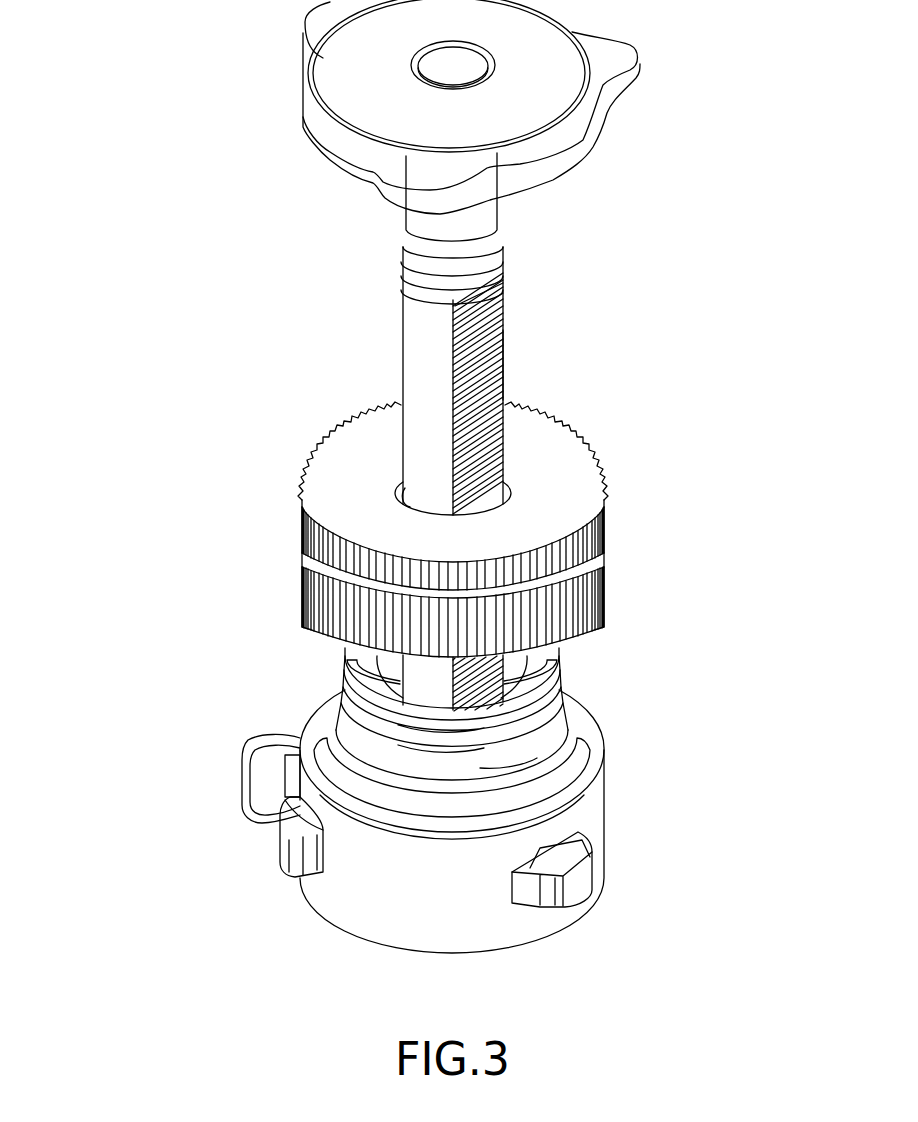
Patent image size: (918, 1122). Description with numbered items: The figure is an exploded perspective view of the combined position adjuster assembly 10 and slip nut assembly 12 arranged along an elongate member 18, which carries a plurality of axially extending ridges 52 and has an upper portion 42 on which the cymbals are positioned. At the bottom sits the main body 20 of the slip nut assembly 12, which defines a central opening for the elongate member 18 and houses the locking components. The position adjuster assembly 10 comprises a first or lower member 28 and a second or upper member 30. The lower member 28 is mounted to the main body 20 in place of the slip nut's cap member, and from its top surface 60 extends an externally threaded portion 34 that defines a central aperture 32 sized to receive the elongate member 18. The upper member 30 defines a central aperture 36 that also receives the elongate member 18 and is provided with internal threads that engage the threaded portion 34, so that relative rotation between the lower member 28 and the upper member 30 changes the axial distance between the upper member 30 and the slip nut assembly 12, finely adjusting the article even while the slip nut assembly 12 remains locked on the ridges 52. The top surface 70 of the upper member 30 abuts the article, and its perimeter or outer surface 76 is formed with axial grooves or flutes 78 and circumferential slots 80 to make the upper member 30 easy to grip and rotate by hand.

The position adjuster assembly 10 is at (110, 541).
The slip nut assembly 12 is at (298, 883).
The elongate member 18 is at (347, 342).
The main body 20 is at (603, 831).
The first or lower member 28 is at (609, 748).
The second or upper member 30 is at (623, 543).
The central aperture 32 is at (530, 670).
The threaded portion 34 is at (343, 674).
The central aperture 36 is at (416, 497).
The upper portion 42 is at (503, 322).
The ridges 52 is at (503, 357).
The top surface 60 is at (577, 700).
The top surface 70 is at (577, 493).
The perimeter or outer surface 76 is at (336, 562).
The axial grooves or flutes 78 is at (340, 612).
The circumferential slots 80 is at (557, 578).